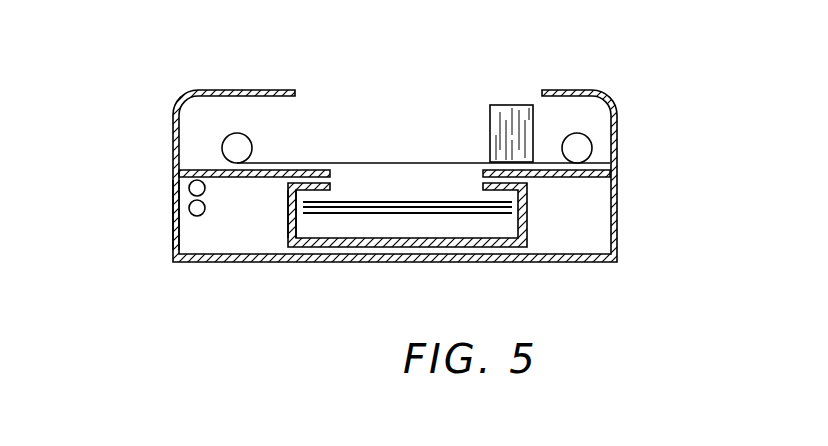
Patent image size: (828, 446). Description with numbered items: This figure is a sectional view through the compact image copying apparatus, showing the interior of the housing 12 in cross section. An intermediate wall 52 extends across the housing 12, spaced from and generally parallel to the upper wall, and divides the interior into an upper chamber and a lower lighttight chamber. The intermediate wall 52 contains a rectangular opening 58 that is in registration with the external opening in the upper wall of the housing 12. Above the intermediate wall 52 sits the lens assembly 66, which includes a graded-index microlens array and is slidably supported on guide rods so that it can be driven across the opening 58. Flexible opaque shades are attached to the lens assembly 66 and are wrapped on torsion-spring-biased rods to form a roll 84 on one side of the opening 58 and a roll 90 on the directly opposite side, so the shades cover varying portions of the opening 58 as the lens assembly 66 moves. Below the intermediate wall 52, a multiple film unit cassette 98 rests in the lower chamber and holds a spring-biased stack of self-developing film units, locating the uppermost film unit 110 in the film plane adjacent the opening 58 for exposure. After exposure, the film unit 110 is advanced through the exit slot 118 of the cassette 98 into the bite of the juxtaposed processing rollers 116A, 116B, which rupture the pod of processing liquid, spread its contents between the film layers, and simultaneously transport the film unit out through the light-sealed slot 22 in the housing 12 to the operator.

The housing 12 is at (616, 118).
The light-sealed slot 22 is at (173, 203).
The intermediate wall 52 is at (271, 170).
The rectangular opening 58 is at (353, 176).
The lens assembly 66 is at (490, 126).
The roll 84 is at (237, 133).
The roll 90 is at (592, 148).
The multiple film unit cassette 98 is at (528, 208).
The uppermost film unit 110 is at (387, 200).
The processing roller 116A is at (192, 188).
The processing roller 116B is at (195, 215).
The exit slot 118 is at (289, 198).